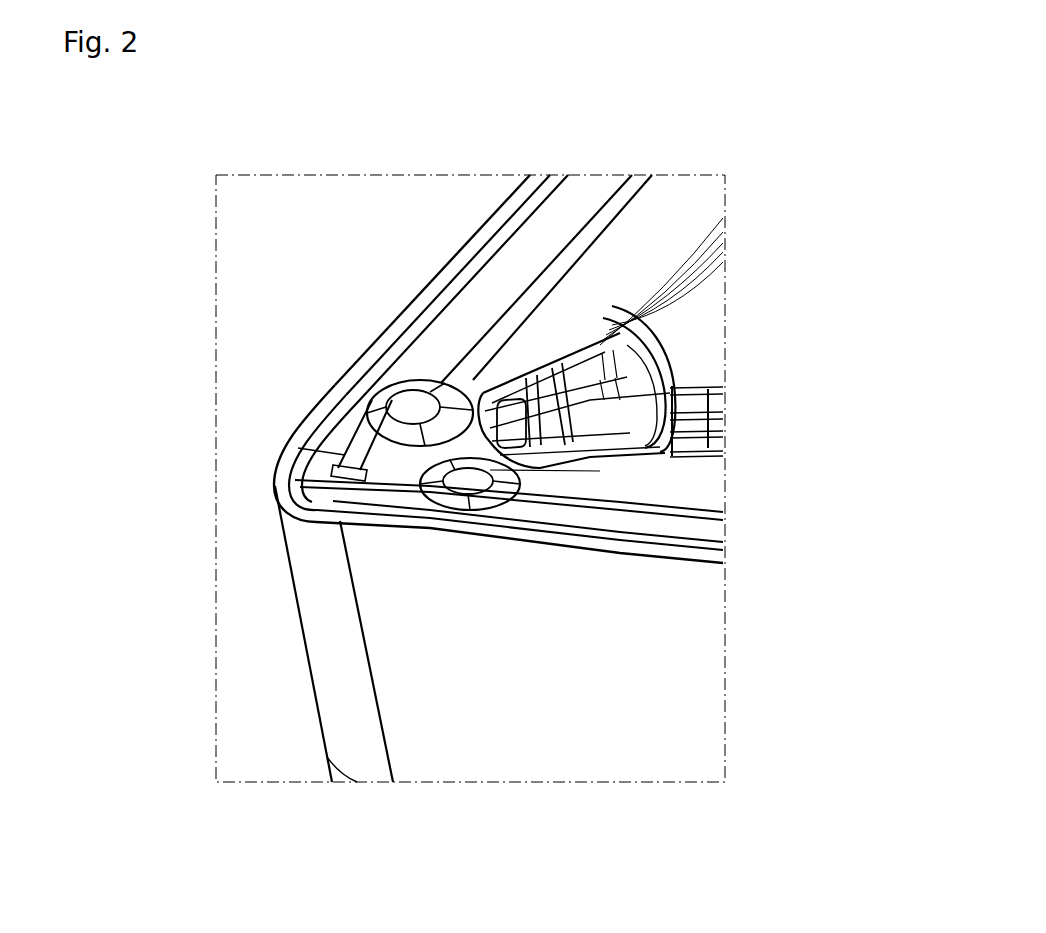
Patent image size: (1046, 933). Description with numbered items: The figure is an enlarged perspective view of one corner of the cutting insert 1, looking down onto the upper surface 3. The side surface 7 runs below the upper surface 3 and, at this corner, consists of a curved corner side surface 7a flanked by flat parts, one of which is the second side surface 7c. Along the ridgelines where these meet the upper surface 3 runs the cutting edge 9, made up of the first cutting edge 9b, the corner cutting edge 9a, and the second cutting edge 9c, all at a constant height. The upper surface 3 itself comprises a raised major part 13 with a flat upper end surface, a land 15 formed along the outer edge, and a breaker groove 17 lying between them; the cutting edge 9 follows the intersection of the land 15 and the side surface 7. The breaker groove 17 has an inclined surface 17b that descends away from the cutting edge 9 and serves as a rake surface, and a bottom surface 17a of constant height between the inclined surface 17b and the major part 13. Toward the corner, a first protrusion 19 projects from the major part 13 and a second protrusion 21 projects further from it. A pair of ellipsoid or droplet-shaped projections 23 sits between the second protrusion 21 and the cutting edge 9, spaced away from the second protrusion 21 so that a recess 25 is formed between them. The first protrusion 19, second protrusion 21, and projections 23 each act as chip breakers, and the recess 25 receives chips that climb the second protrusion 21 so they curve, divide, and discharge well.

The cutting insert 1 is at (311, 114).
The upper surface 3 is at (556, 271).
The major part 13 is at (700, 347).
The land 15 is at (469, 250).
The breaker groove 17 is at (725, 90).
The bottom surface 17a is at (663, 193).
The inclined surface 17b is at (583, 193).
The side surface 7 is at (429, 686).
The corner side surface 7a is at (331, 652).
The second side surface 7c is at (623, 755).
The cutting edge 9 is at (494, 405).
The corner cutting edge 9a is at (300, 512).
The first cutting edge 9b is at (360, 357).
The second cutting edge 9c is at (653, 557).
The first protrusion 19 is at (593, 400).
The second protrusion 21 is at (525, 425).
The projections 23 is at (405, 407).
The recess 25 is at (473, 407).